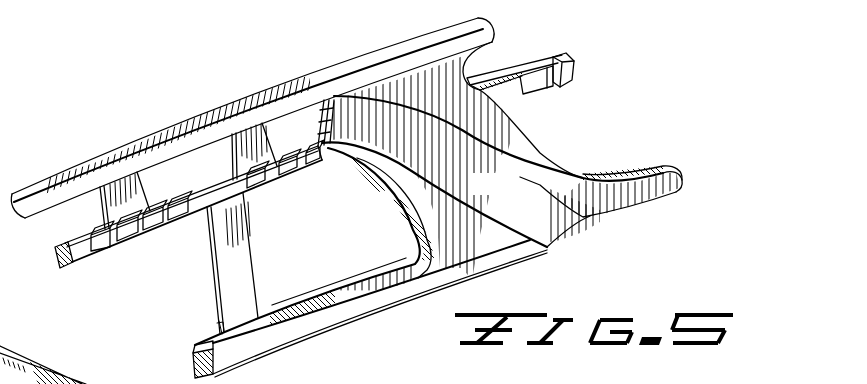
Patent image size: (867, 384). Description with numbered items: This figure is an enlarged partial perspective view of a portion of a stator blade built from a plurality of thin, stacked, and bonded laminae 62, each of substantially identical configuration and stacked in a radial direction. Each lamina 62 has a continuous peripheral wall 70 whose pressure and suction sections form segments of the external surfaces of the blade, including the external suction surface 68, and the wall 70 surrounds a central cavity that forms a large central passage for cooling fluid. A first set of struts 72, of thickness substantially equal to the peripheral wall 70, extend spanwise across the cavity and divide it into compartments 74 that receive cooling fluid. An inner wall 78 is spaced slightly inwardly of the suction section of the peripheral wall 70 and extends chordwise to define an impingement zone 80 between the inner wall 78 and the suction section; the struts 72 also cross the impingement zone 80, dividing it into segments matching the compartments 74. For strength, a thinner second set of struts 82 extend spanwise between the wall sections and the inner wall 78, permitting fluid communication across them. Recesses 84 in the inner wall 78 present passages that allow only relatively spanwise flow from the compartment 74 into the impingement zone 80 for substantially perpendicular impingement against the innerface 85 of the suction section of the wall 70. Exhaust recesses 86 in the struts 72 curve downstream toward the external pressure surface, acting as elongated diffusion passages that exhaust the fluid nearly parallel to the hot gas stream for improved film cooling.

The laminae 62 is at (480, 278).
The external suction surface 68 is at (318, 70).
The peripheral wall 70 is at (67, 170).
The first set of struts 72 is at (422, 211).
The compartments 74 is at (566, 150).
The inner wall 78 is at (82, 261).
The impingement zone 80 is at (62, 226).
The second set of struts 82 is at (240, 144).
The recesses 84 is at (192, 206).
The innerface 85 is at (178, 152).
The exhaust recesses 86 is at (476, 194).